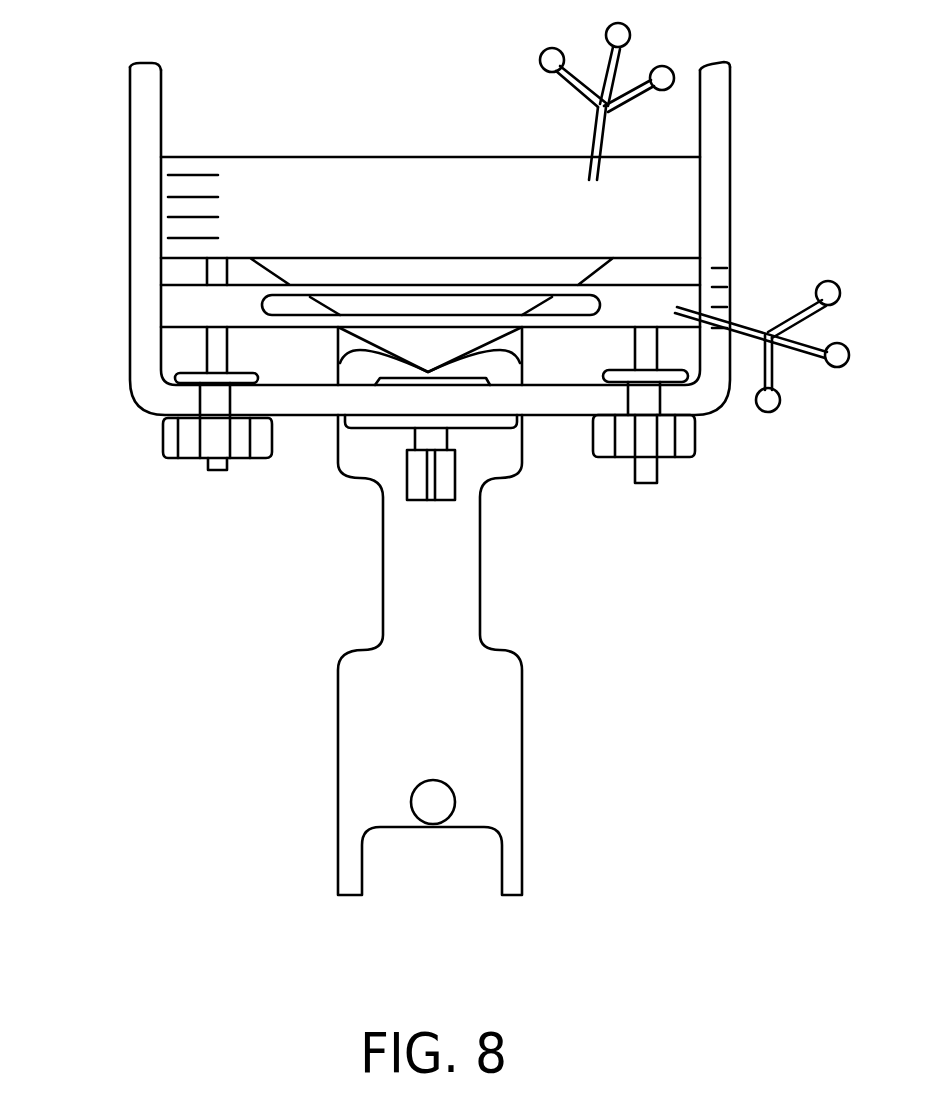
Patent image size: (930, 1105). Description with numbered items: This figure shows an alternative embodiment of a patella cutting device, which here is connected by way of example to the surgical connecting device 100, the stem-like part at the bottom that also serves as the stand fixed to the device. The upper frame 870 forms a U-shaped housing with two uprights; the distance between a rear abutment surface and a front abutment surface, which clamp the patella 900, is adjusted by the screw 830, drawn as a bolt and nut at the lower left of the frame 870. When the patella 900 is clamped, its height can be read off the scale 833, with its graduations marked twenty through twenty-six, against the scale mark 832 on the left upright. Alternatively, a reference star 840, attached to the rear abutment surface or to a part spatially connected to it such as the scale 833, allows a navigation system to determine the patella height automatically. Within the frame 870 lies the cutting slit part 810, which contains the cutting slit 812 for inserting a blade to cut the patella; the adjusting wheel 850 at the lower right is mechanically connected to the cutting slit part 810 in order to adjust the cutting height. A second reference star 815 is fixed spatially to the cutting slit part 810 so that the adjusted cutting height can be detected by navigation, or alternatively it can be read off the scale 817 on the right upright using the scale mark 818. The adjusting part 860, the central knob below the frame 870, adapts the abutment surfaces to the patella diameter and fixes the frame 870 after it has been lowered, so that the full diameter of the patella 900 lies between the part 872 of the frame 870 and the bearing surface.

The connecting device 100 is at (535, 688).
The cutting slit part 810 is at (673, 303).
The cutting slit 812 is at (573, 303).
The reference star 815 is at (797, 347).
The scale 817 is at (717, 240).
The scale mark 818 is at (648, 303).
The screw (turning knob) 830 is at (192, 440).
The scale mark 832 is at (128, 143).
The scale 833 is at (192, 150).
The reference star 840 is at (600, 105).
The adjusting wheel 850 is at (667, 443).
The adjusting part (turning knob / adjusting wheel) 860 is at (445, 483).
The frame 870 is at (140, 308).
The part of the frame 872 is at (373, 172).
The patella 900 is at (262, 270).